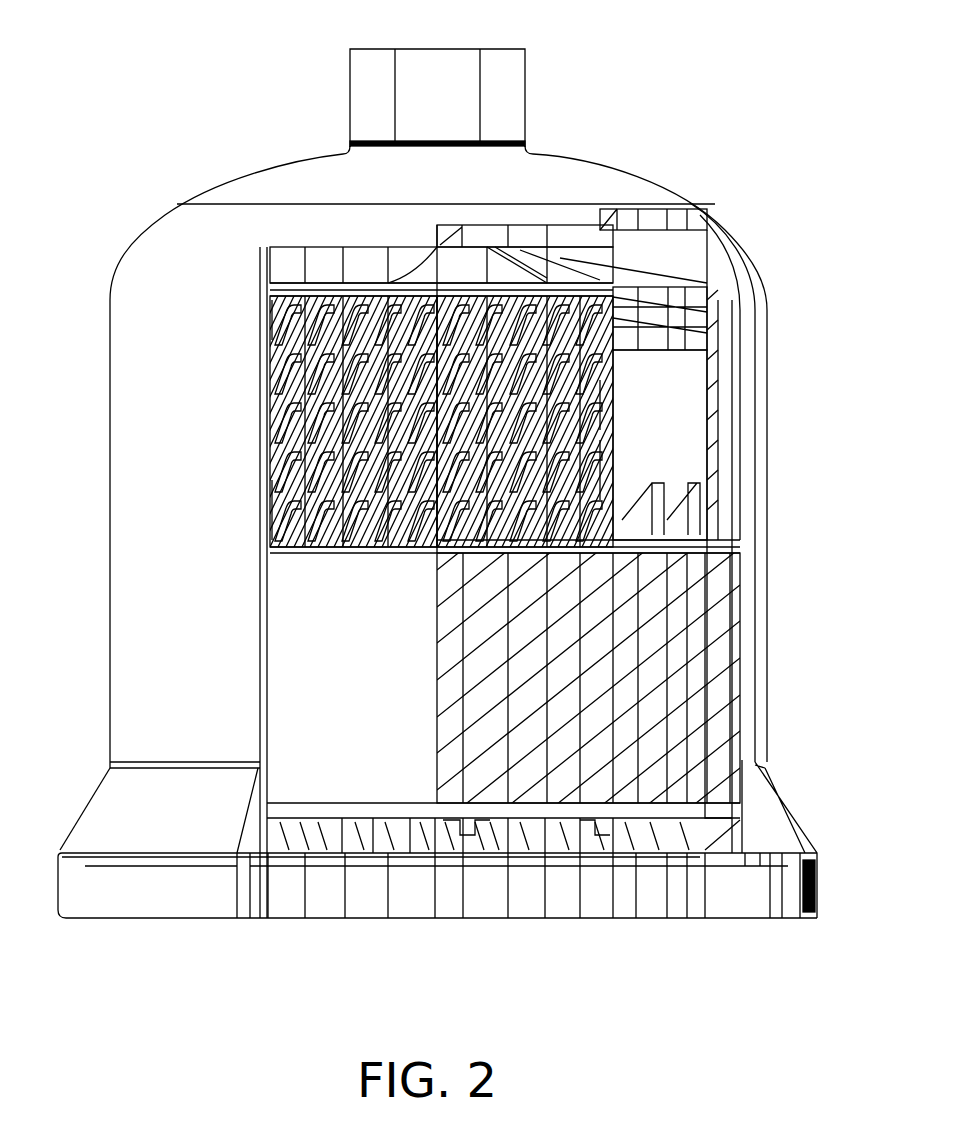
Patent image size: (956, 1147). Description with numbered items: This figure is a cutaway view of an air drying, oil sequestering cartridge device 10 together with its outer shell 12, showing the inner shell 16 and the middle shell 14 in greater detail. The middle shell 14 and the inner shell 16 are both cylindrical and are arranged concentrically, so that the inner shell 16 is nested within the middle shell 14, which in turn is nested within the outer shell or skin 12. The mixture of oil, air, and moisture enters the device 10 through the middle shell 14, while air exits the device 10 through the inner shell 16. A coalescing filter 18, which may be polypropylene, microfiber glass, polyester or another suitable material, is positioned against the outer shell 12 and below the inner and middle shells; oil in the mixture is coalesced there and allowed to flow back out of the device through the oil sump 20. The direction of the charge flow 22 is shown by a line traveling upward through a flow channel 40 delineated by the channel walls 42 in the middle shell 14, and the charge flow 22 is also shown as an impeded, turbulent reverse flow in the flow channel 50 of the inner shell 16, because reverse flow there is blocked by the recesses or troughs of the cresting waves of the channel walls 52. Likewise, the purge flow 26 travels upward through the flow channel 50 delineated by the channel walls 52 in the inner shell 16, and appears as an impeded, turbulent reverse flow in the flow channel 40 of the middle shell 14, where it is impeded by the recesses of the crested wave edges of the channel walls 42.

The air drying, oil sequestering cartridge device 10 is at (250, 58).
The outer shell 12 is at (168, 264).
The middle shell 14 is at (354, 345).
The inner shell 16 is at (522, 341).
The coalescing filter 18 is at (407, 667).
The oil sump 20 is at (450, 840).
The charge flow 22 is at (440, 380).
The purge flow 26 is at (430, 555).
The flow channel 40 is at (278, 343).
The channel walls 42 is at (278, 510).
The flow channel 50 is at (576, 415).
The channel walls 52 is at (598, 462).